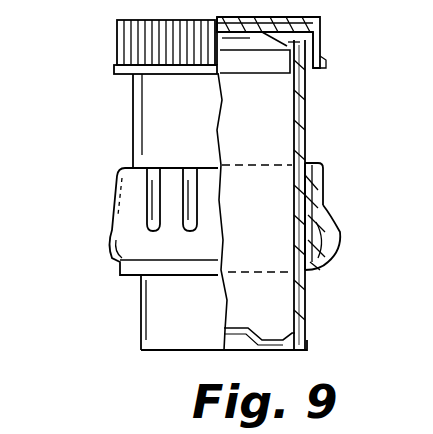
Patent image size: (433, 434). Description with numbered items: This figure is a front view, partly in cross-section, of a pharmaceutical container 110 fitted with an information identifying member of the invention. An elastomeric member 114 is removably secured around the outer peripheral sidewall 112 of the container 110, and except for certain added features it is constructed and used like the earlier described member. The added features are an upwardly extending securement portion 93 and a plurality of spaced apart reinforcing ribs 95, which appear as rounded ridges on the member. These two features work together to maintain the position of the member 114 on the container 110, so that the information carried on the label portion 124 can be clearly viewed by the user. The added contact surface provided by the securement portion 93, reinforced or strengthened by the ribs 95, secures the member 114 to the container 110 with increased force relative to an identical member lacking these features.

The pharmaceutical container 110 is at (103, 84).
The outer peripheral sidewall 112 is at (133, 138).
The elastomeric member 114 is at (104, 218).
The reinforcing ribs 95 is at (190, 170).
The securement portion 93 is at (322, 197).
The label portion 124 is at (326, 238).